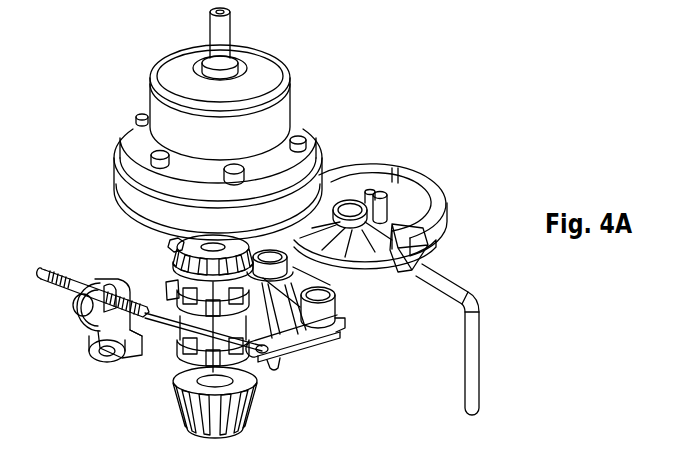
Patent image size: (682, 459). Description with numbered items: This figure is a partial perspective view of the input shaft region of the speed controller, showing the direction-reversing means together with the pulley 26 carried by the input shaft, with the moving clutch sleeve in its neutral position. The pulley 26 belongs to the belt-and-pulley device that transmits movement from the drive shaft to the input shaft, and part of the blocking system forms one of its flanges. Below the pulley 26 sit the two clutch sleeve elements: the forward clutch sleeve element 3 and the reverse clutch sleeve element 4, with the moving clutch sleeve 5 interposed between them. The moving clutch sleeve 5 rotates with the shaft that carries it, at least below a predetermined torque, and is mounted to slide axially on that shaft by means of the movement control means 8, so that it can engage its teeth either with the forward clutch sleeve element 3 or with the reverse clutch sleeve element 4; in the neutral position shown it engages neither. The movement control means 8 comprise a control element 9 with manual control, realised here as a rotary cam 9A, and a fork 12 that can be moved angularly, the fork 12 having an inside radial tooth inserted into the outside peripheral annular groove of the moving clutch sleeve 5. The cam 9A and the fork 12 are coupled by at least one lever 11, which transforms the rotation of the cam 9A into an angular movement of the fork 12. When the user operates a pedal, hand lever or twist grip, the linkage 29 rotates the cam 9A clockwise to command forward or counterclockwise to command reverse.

The forward clutch sleeve element 3 is at (170, 246).
The reverse clutch sleeve element 4 is at (168, 409).
The moving clutch sleeve 5 is at (170, 296).
The movement control means 8 is at (357, 298).
The control element 9 is at (433, 180).
The rotary cam 9A is at (398, 162).
The lever 11 is at (300, 347).
The fork 12 is at (157, 314).
The pulley 26 is at (327, 130).
The linkage 29 is at (462, 344).